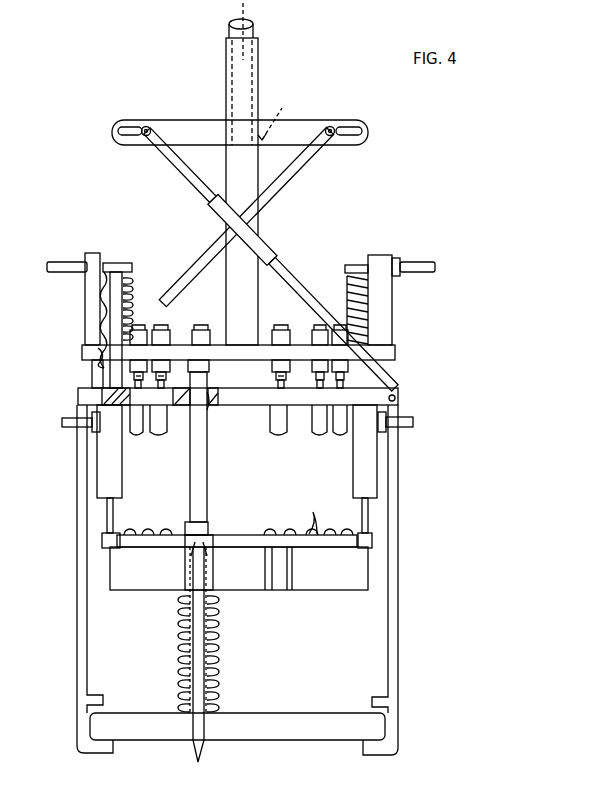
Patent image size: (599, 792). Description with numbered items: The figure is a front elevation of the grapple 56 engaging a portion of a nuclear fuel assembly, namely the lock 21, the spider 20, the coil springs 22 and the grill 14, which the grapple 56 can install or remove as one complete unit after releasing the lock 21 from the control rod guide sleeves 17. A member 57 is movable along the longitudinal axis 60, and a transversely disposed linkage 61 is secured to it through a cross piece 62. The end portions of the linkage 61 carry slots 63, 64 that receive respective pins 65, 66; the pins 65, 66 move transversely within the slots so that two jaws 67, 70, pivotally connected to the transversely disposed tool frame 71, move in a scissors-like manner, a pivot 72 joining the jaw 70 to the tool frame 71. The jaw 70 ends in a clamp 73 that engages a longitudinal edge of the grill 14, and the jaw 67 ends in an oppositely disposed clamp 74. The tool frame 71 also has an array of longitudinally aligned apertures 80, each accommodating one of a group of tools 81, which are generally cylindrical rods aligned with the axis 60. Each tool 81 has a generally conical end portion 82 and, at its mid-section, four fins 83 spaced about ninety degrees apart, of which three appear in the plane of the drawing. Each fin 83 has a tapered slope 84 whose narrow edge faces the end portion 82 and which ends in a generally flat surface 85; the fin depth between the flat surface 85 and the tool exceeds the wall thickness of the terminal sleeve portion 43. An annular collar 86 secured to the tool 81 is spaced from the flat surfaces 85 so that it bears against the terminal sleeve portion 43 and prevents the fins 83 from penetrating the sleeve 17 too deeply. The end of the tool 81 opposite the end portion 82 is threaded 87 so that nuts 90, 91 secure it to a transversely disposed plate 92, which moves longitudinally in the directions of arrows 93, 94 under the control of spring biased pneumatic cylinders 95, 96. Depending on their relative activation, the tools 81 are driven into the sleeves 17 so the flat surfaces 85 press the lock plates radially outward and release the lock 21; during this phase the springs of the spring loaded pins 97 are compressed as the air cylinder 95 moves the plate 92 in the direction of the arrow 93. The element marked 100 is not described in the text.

The grill 14 is at (312, 716).
The control rod guide sleeve 17 is at (313, 512).
The spider 20 is at (355, 577).
The lock 21 is at (262, 533).
The coil springs 22 is at (216, 620).
The terminal sleeve portion 43 is at (185, 535).
The grapple 56 is at (279, 237).
The member 57 is at (260, 62).
The longitudinal axis 60 is at (247, 12).
The linkage 61 is at (207, 130).
The cross piece 62 is at (278, 114).
The slot 63 is at (368, 135).
The slot 64 is at (120, 127).
The pin 65 is at (332, 127).
The pin 66 is at (146, 127).
The jaw 67 is at (303, 161).
The jaw 70 is at (180, 165).
The tool frame 71 is at (203, 395).
The pivot 72 is at (396, 398).
The clamp 73 is at (385, 752).
The clamp 74 is at (95, 752).
The apertures 80 is at (208, 405).
The tools 81 is at (137, 438).
The end portion 82 is at (201, 762).
The fins 83 is at (210, 535).
The tapered slope 84 is at (205, 550).
The flat surface 85 is at (192, 550).
The annular collar 86 is at (195, 522).
The thread 87 is at (200, 326).
The nut 90 is at (186, 342).
The nut 91 is at (180, 404).
The plate 92 is at (298, 342).
The arrow 93 is at (478, 350).
The arrow 94 is at (520, 307).
The pneumatic cylinder 95 is at (90, 290).
The pneumatic cylinder 96 is at (108, 437).
The spring loaded pins 97 is at (122, 282).
The stop block 100 is at (100, 362).